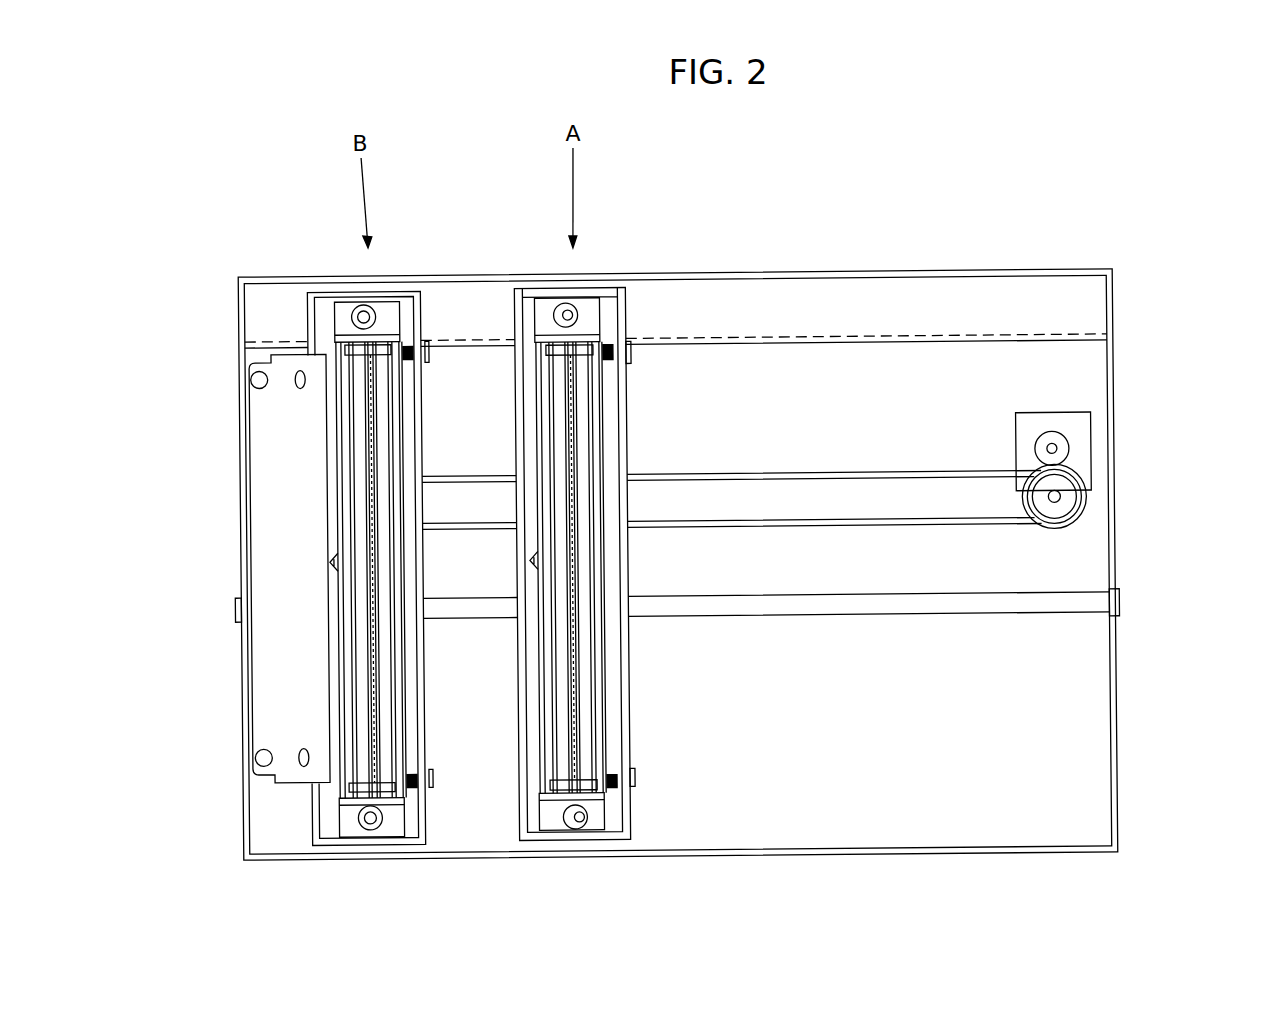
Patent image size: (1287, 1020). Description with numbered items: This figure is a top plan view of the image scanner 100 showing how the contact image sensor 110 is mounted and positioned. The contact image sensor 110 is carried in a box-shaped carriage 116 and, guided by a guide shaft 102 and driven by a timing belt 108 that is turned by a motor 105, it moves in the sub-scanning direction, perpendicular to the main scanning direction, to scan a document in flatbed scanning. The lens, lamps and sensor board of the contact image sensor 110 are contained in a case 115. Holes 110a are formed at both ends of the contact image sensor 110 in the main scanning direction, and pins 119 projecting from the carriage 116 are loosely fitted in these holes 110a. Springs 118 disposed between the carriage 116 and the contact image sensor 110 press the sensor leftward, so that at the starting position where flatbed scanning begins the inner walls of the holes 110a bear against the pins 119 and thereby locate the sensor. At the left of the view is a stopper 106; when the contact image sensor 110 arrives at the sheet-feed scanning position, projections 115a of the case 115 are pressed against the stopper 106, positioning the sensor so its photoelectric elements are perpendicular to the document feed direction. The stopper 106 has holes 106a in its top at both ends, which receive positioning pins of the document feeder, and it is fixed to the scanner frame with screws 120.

The housing frame 100 is at (675, 564).
The guide shaft 102 is at (936, 622).
The motor 105 is at (1093, 454).
The stopper 106 is at (270, 559).
The holes 106a is at (304, 366).
The timing belt 108 is at (912, 529).
The contact image sensor 110 is at (496, 561).
The holes 110a is at (568, 311).
The case 115 is at (409, 657).
The projections 115a is at (337, 347).
The carriage 116 is at (430, 566).
The springs 118 is at (602, 299).
The pins 119 is at (570, 304).
The screws 120 is at (259, 378).